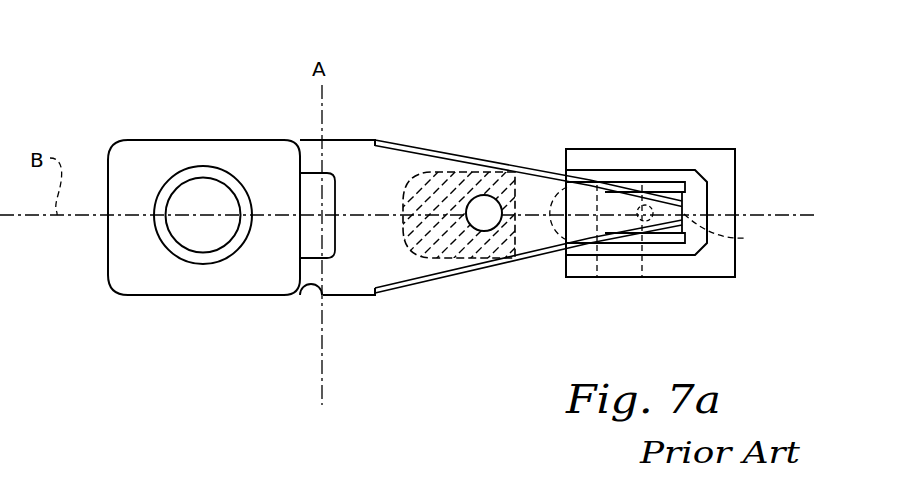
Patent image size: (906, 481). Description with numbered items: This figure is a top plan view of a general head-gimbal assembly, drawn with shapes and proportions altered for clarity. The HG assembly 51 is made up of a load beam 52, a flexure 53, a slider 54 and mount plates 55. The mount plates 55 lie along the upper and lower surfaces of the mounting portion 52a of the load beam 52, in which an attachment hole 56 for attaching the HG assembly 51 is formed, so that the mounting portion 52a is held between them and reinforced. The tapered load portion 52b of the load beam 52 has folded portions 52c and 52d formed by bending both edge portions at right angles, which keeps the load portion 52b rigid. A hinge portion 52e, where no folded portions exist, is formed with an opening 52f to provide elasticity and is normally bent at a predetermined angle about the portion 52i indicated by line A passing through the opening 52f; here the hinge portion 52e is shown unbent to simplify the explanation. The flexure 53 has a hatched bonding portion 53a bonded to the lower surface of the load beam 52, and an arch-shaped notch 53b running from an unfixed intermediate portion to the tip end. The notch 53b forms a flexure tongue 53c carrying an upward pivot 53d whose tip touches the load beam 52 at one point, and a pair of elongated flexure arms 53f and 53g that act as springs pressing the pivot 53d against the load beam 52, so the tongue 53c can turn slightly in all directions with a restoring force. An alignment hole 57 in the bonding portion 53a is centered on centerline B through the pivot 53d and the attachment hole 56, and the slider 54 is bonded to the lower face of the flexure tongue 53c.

The HG assembly 51 is at (532, 86).
The load beam 52 is at (340, 139).
The mounting portion 52a is at (205, 150).
The load portion 52b is at (380, 173).
The folded portion 52c is at (510, 175).
The folded portion 52d is at (492, 262).
The hinge portion 52e is at (370, 297).
The opening 52f is at (330, 252).
The portion 52i is at (303, 297).
The flexure 53 is at (603, 182).
The bonding portion 53a is at (455, 262).
The arch-shaped notch 53b is at (597, 262).
The flexure tongue 53c is at (647, 282).
The pivot 53d is at (745, 238).
The flexure arm 53f is at (660, 182).
The flexure arm 53g is at (616, 250).
The slider 54 is at (718, 162).
The mount plate 55 is at (170, 292).
The attachment hole 56 is at (197, 195).
The alignment hole 57 is at (483, 195).